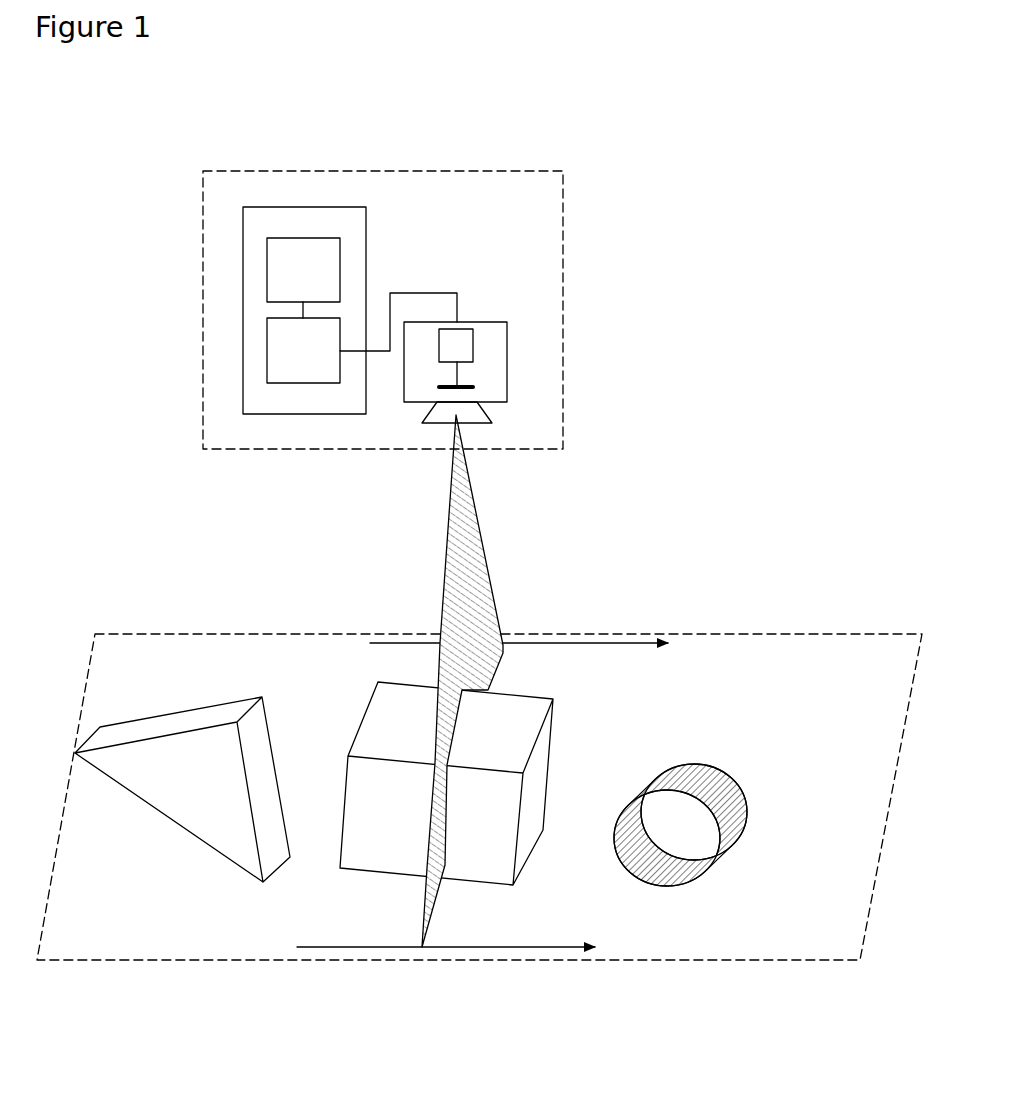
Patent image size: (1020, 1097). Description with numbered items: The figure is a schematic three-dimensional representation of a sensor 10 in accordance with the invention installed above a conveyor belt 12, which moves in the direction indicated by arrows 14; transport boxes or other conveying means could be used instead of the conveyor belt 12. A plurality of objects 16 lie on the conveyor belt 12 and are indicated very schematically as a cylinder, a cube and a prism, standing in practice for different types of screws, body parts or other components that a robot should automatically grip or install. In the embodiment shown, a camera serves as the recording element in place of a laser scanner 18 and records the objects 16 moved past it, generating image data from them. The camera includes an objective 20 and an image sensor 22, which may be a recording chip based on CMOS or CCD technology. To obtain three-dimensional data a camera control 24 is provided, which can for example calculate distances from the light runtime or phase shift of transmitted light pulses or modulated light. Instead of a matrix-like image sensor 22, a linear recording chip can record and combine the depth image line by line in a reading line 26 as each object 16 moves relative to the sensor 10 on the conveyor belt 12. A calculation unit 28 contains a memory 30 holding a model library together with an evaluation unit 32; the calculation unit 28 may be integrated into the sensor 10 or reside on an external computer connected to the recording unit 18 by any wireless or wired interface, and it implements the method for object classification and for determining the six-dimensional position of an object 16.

The sensor 10 is at (563, 195).
The conveyor belt 12 is at (170, 960).
The arrows 14 is at (463, 948).
The objects 16 is at (225, 718).
The laser scanner 18 is at (513, 352).
The objective 20 is at (485, 412).
The image sensor 22 is at (476, 387).
The camera control 24 is at (463, 350).
The reading line 26 is at (436, 681).
The calculation unit 28 is at (242, 365).
The memory 30 is at (290, 243).
The evaluation unit 32 is at (302, 390).